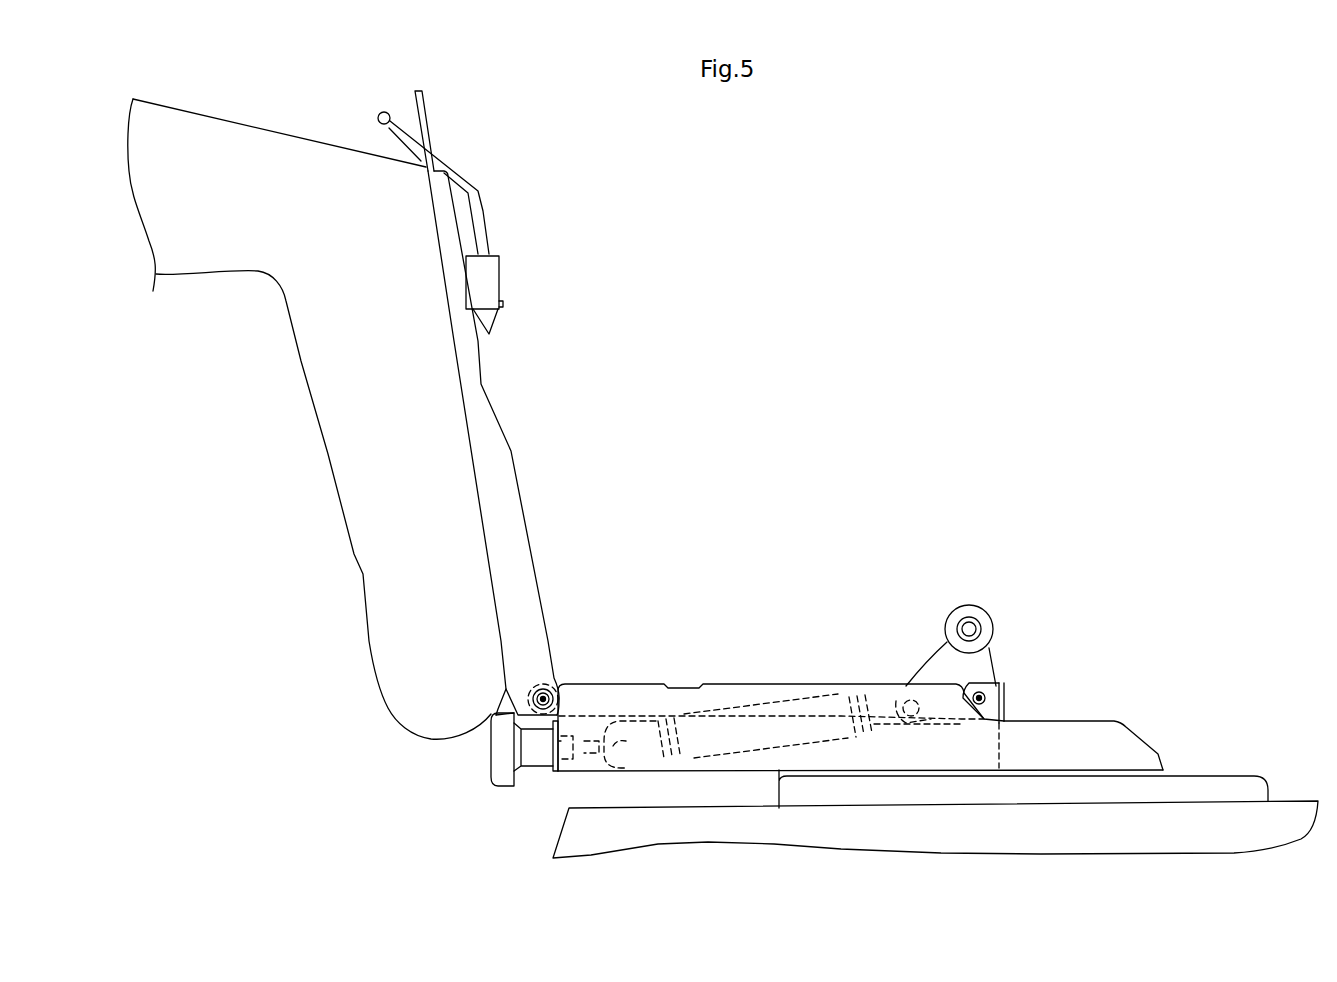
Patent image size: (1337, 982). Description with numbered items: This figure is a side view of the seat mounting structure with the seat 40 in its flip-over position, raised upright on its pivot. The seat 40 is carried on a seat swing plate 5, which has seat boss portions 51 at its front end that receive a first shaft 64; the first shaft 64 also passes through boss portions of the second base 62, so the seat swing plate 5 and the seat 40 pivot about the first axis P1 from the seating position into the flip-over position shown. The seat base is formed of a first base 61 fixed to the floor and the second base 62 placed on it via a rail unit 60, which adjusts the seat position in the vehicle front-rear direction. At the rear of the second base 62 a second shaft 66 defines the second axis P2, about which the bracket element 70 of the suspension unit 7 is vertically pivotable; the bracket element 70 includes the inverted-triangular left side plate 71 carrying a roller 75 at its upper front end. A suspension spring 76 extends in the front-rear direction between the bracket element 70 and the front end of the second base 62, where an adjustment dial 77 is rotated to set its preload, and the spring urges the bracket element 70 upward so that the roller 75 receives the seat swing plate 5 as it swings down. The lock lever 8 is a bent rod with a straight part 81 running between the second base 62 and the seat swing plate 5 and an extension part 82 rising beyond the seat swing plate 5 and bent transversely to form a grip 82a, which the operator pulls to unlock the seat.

The seat swing plate 5 is at (505, 515).
The suspension unit 7 is at (972, 599).
The lock lever 8 is at (434, 208).
The seat 40 is at (322, 460).
The seat boss portions 51 is at (520, 678).
The rail unit 60 is at (1080, 761).
The first base 61 is at (1193, 776).
The second base 62 is at (735, 683).
The first shaft 64 is at (534, 680).
The second shaft 66 is at (971, 679).
The bracket element 70 is at (971, 619).
The left side plate 71 is at (936, 656).
The roller 75 is at (945, 599).
The suspension spring 76 is at (846, 680).
The adjustment dial 77 is at (483, 738).
The straight part 81 is at (481, 233).
The extension part 82 is at (430, 145).
The grip 82a is at (370, 107).
The first axis P1 is at (526, 691).
The second axis P2 is at (978, 690).